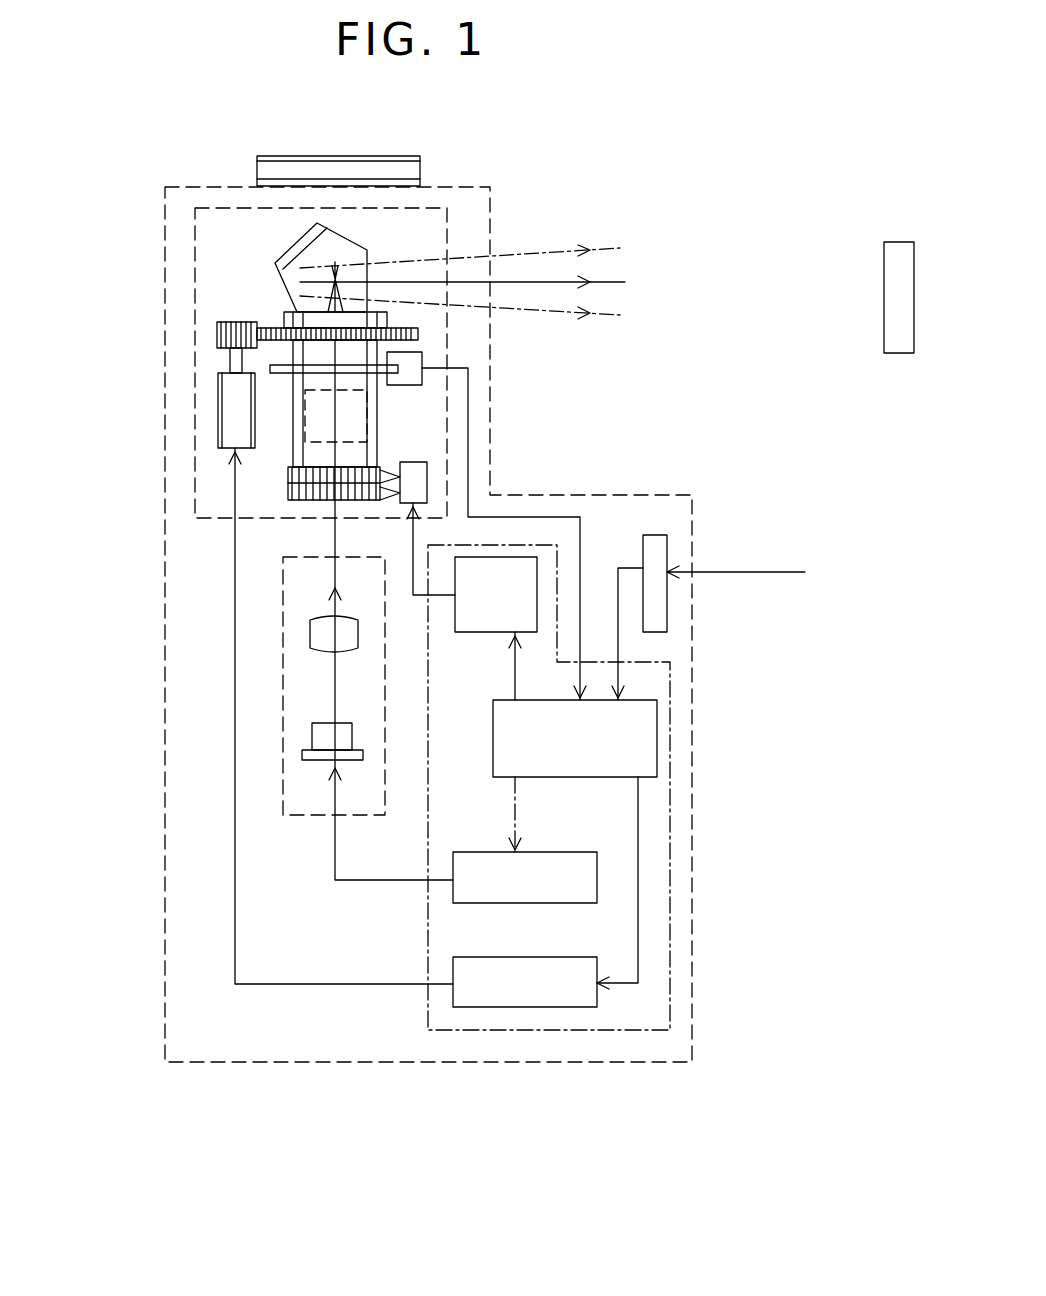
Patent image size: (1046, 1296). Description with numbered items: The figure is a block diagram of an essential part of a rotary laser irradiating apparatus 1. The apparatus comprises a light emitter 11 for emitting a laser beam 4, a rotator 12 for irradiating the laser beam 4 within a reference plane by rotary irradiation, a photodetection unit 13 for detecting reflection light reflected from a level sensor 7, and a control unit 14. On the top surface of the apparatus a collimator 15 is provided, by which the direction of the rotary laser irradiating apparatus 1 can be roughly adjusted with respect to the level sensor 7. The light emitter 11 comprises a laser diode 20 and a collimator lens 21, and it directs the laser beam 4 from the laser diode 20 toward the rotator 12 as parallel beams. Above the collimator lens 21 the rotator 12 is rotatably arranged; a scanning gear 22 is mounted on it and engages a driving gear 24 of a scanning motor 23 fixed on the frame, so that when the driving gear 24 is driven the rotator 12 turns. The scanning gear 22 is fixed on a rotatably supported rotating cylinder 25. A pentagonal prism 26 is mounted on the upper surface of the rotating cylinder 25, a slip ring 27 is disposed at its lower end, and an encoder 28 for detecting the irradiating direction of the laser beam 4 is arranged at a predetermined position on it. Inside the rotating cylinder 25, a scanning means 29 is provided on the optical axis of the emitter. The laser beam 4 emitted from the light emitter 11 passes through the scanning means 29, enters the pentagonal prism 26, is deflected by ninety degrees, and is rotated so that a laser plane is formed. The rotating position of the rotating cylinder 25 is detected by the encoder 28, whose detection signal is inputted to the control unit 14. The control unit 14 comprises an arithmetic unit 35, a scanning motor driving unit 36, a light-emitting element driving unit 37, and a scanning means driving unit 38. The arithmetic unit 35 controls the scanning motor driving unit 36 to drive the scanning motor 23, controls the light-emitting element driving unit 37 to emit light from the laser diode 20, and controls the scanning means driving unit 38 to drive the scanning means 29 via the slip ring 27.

The rotary laser irradiating apparatus 1 is at (165, 642).
The laser beam 4 is at (535, 282).
The level sensor 7 is at (884, 265).
The light emitter 11 is at (283, 713).
The rotator 12 is at (196, 280).
The photodetection unit 13 is at (667, 608).
The control unit 14 is at (610, 787).
The collimator 15 is at (325, 156).
The laser diode 20 is at (302, 755).
The collimator lens 21 is at (317, 617).
The scanning gear 22 is at (283, 328).
The scanning motor 23 is at (232, 402).
The driving gear 24 is at (217, 335).
The rotating cylinder 25 is at (377, 435).
The pentagonal prism 26 is at (367, 250).
The slip ring 27 is at (412, 450).
The encoder 28 is at (424, 350).
The scanning means 29 is at (297, 437).
The arithmetic unit 35 is at (657, 740).
The scanning motor driving unit 36 is at (530, 1007).
The light-emitting element driving unit 37 is at (597, 887).
The scanning means driving unit 38 is at (527, 557).